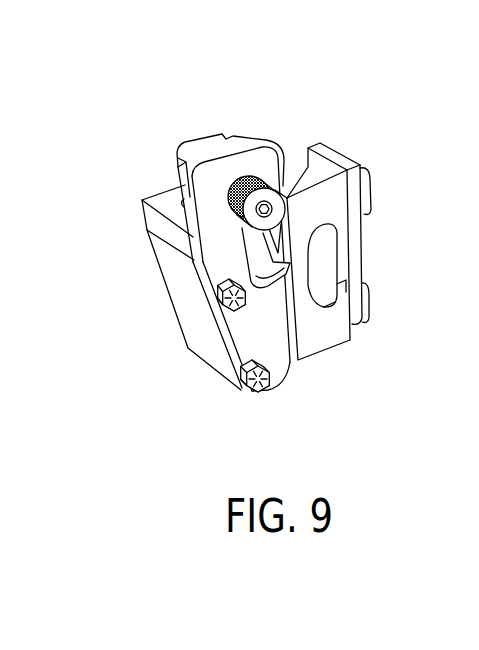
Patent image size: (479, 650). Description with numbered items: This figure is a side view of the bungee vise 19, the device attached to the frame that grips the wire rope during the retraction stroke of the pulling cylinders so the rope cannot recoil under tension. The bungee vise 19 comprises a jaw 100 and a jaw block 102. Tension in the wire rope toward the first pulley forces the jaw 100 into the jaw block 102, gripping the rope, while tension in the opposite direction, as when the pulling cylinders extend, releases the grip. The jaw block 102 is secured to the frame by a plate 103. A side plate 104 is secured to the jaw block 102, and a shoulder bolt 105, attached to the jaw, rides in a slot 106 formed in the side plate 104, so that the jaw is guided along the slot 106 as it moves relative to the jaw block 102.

The bungee vise 19 is at (251, 261).
The jaw 100 is at (202, 143).
The jaw block 102 is at (187, 310).
The plate 103 is at (367, 212).
The side plate 104 is at (257, 137).
The shoulder bolt 105 is at (281, 186).
The slot 106 is at (243, 257).